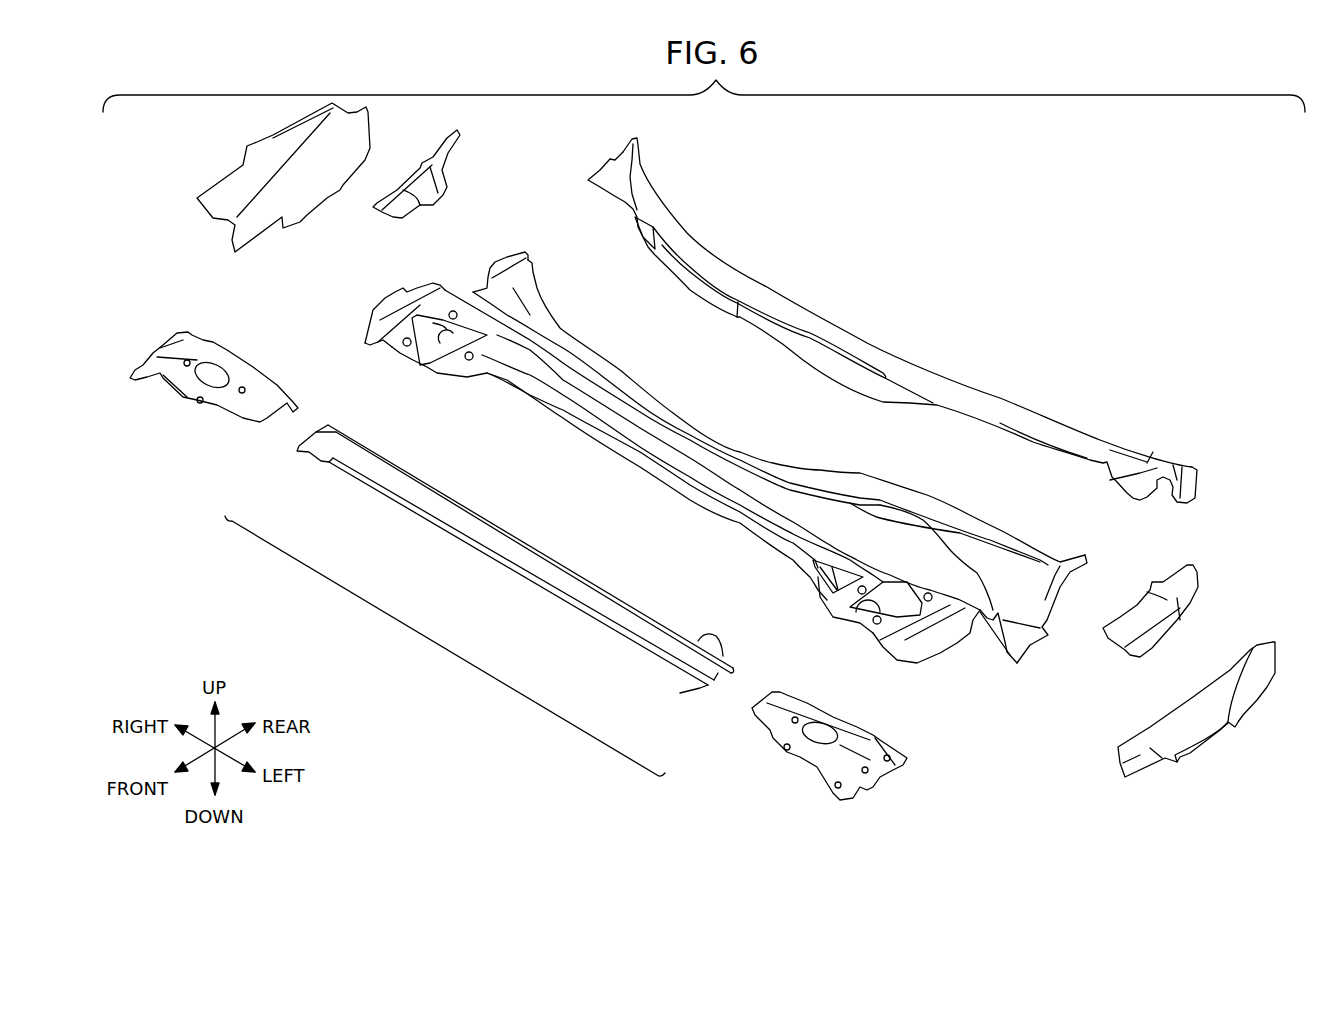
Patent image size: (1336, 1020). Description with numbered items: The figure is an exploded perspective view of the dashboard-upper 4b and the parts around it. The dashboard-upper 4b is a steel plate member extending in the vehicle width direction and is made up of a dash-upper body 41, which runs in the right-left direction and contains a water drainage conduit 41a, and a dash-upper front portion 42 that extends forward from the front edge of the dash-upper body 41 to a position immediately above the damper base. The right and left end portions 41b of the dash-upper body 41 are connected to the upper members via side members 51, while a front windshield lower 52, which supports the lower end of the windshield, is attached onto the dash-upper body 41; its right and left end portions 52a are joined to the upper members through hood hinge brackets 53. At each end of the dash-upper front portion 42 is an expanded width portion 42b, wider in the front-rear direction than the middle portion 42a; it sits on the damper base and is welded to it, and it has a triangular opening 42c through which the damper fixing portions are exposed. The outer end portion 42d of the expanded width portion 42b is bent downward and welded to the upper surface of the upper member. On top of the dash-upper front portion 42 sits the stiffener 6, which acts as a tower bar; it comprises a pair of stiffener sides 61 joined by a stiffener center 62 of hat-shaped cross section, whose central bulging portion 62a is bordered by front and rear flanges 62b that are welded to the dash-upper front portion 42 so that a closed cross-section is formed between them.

The dashboard-upper 4b is at (735, 467).
The dash-upper body 41 is at (794, 464).
The water drainage conduit 41a is at (1030, 640).
The right and left end portions of the dash-upper body 41b is at (505, 258).
The dash-upper front portion 42 is at (653, 495).
The middle portion 42a is at (610, 442).
The expanded width portion 42b is at (830, 600).
The opening 42c is at (428, 357).
The end portion 42d is at (370, 330).
The side member 51 is at (243, 172).
The front windshield lower 52 is at (920, 316).
The right and left end portions of the front windshield lower 52a is at (607, 163).
The hood hinge bracket 53 is at (445, 153).
The stiffener 6 is at (518, 566).
The stiffener side 61 is at (240, 412).
The stiffener center 62 is at (515, 565).
The bulging portion 62a is at (617, 606).
The flange 62b is at (687, 697).